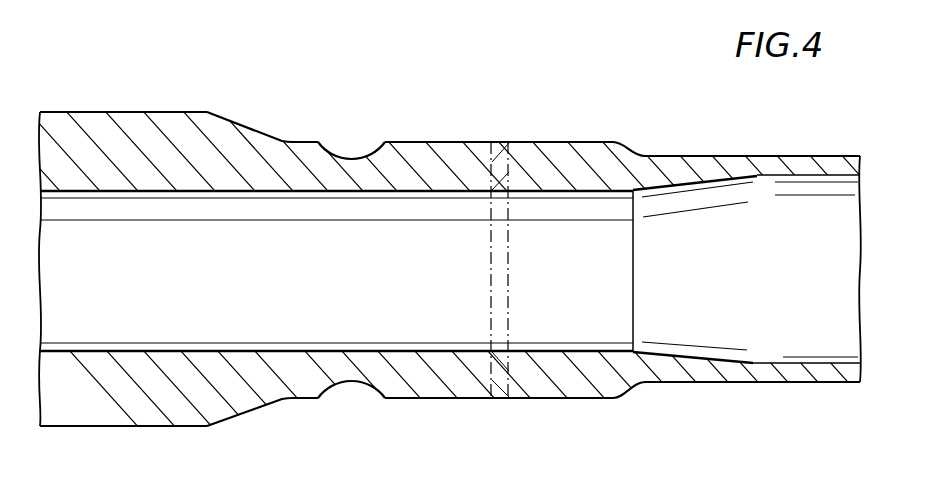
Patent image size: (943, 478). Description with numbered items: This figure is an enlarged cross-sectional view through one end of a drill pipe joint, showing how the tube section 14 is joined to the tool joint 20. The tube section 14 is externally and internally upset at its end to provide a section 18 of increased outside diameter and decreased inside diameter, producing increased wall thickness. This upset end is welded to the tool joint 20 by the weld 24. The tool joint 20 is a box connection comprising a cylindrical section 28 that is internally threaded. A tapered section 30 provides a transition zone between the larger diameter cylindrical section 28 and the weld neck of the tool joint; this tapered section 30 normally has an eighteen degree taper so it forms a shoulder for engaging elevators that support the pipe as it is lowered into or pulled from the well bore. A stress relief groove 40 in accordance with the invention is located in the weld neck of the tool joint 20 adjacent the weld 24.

The tube section 14 is at (832, 155).
The upset section 18 is at (587, 140).
The tool joint 20 is at (175, 93).
The weld 24 is at (497, 141).
The cylindrical section 28 is at (124, 107).
The tapered section 30 is at (248, 125).
The stress relief groove 40 is at (350, 150).